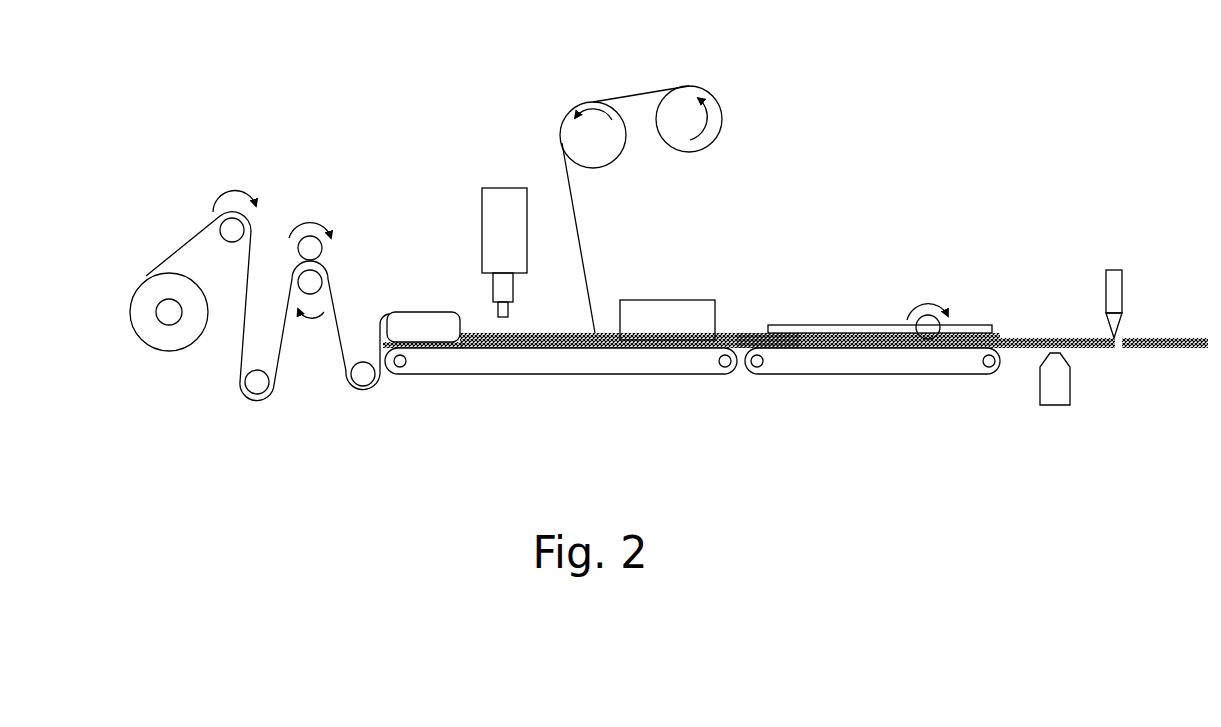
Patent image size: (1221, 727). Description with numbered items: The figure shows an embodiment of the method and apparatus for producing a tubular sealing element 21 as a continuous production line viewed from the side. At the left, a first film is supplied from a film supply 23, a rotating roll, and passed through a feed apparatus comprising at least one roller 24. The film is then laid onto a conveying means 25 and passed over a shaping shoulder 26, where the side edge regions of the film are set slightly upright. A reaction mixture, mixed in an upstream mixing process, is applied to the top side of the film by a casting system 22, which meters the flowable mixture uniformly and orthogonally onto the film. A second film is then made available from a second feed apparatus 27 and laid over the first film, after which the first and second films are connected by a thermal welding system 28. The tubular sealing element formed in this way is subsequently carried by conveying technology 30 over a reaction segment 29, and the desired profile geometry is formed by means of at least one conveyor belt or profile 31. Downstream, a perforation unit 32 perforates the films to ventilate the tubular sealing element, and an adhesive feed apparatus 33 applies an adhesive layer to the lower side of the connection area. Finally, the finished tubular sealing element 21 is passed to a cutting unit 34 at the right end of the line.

The tubular sealing element 21 is at (1155, 338).
The casting system 22 is at (494, 215).
The film supply 23 is at (166, 335).
The roller 24 is at (307, 252).
The conveying means 25 is at (415, 362).
The shaping shoulder 26 is at (401, 322).
The second feed apparatus 27 is at (582, 125).
The thermal welding system 28 is at (676, 322).
The reaction segment 29 is at (795, 342).
The conveying technology 30 is at (782, 358).
The conveyor belt or profile 31 is at (968, 330).
The perforation unit 32 is at (931, 318).
The adhesive feed apparatus 33 is at (1065, 393).
The cutting unit 34 is at (1117, 272).